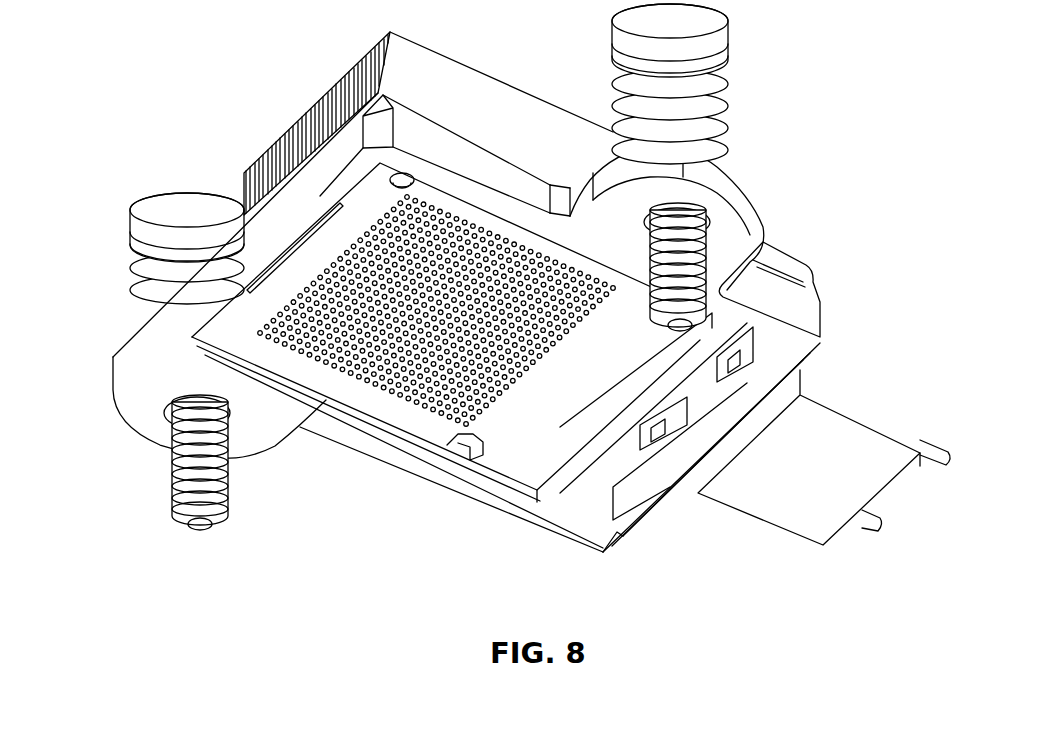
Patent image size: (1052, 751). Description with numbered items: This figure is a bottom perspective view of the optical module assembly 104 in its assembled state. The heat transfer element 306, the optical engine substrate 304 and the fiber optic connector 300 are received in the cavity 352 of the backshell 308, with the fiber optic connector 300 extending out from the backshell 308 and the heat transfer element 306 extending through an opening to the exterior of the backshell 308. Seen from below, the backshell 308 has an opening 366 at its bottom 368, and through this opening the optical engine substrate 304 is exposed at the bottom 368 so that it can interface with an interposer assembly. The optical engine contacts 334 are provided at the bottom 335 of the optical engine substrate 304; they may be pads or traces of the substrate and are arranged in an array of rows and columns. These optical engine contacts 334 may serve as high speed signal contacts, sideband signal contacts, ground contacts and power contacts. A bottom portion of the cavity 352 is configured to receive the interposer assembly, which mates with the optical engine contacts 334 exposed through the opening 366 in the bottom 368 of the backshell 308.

The optical module assembly 104 is at (243, 68).
The fiber optic connector 300 is at (786, 540).
The optical engine substrate 304 is at (608, 545).
The heat transfer element 306 is at (350, 57).
The backshell 308 is at (104, 393).
The optical engine contacts 334 is at (500, 405).
The bottom of the optical engine substrate 335 is at (372, 400).
The cavity 352 is at (815, 350).
The opening 366 is at (304, 400).
The bottom of the backshell 368 is at (430, 462).